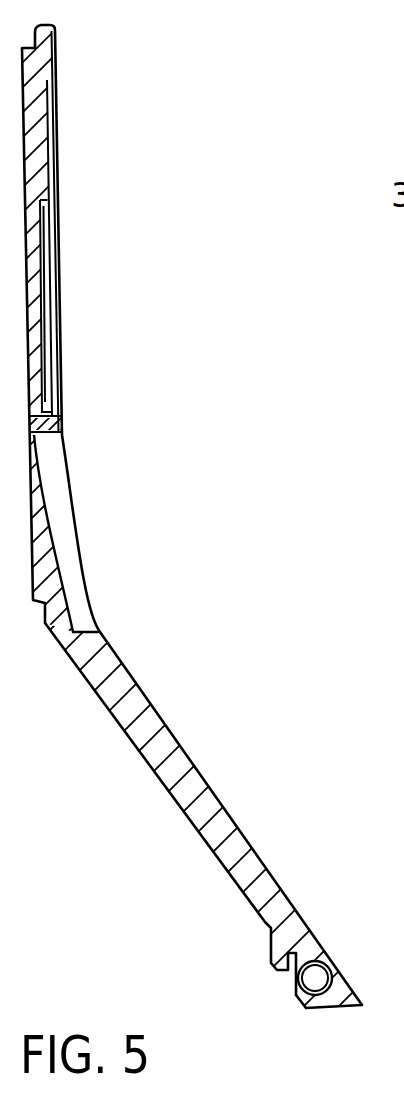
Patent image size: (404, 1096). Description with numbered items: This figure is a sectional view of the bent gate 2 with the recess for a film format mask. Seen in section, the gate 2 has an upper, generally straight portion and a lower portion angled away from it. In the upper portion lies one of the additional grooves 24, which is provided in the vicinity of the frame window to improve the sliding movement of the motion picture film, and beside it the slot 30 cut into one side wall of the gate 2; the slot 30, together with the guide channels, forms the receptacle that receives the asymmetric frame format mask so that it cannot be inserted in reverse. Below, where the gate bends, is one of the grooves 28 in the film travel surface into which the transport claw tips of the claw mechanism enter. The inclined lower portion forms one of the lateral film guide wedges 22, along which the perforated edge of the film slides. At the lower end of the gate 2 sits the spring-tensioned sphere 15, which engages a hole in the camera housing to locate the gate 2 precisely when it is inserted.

The gate 2 is at (46, 116).
The groove 24 is at (56, 213).
The slot 30 is at (52, 315).
The groove 28 is at (62, 570).
The film guide wedge 22 is at (173, 750).
The sphere 15 is at (310, 980).